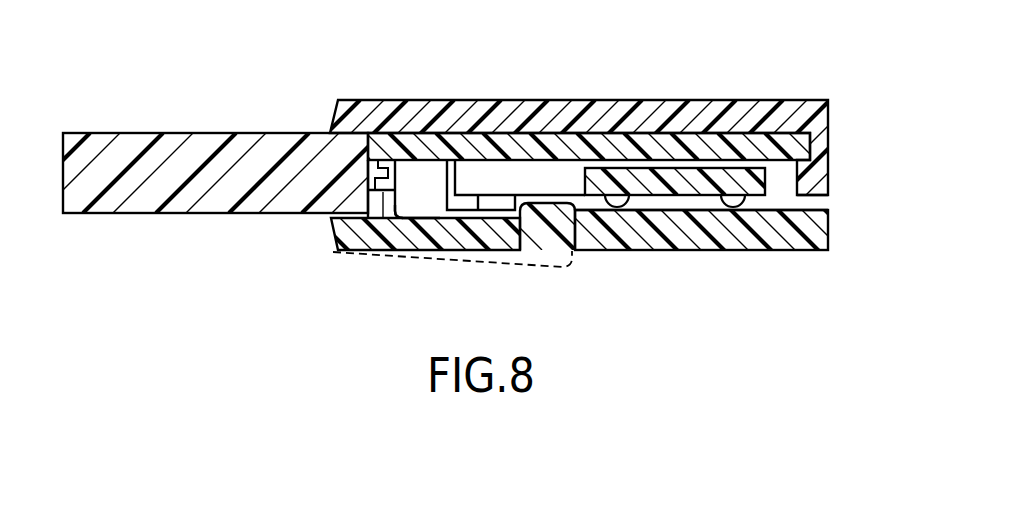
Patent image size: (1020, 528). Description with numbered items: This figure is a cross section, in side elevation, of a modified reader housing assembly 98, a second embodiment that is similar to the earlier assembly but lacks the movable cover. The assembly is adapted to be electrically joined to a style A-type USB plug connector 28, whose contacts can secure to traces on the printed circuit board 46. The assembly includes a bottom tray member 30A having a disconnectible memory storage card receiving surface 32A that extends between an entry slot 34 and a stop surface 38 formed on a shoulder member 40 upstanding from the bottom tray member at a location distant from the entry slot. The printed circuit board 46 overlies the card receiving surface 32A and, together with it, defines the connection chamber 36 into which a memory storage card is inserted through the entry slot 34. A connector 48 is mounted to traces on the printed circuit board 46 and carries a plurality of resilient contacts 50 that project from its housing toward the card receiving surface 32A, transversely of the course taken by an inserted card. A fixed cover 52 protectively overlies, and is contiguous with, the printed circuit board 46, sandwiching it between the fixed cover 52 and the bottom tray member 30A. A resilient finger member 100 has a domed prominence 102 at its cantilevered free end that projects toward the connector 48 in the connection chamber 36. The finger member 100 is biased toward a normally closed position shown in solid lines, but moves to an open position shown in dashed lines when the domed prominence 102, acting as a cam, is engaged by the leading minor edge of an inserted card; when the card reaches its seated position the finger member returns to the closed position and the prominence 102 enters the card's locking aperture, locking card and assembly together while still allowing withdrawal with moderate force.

The USB plug connector 28 is at (170, 132).
The bottom tray member 30A is at (610, 252).
The disconnectible memory storage card receiving surface 32A is at (440, 214).
The entry slot 34 is at (822, 205).
The connection chamber 36 is at (707, 204).
The stop surface 38 is at (402, 183).
The shoulder member 40 is at (383, 193).
The printed circuit board 46 is at (618, 140).
The connector 48 is at (736, 180).
The resilient contacts 50 is at (735, 207).
The fixed cover 52 is at (462, 98).
The modified reader housing assembly 98 is at (673, 53).
The resilient finger member 100 is at (437, 220).
The domed prominence 102 is at (548, 190).